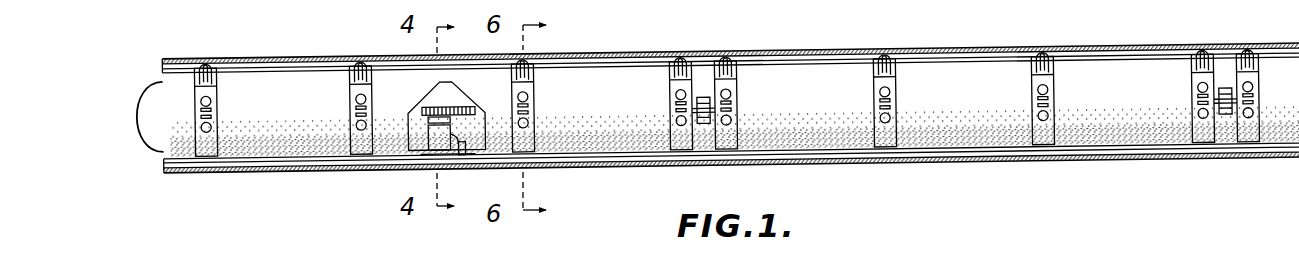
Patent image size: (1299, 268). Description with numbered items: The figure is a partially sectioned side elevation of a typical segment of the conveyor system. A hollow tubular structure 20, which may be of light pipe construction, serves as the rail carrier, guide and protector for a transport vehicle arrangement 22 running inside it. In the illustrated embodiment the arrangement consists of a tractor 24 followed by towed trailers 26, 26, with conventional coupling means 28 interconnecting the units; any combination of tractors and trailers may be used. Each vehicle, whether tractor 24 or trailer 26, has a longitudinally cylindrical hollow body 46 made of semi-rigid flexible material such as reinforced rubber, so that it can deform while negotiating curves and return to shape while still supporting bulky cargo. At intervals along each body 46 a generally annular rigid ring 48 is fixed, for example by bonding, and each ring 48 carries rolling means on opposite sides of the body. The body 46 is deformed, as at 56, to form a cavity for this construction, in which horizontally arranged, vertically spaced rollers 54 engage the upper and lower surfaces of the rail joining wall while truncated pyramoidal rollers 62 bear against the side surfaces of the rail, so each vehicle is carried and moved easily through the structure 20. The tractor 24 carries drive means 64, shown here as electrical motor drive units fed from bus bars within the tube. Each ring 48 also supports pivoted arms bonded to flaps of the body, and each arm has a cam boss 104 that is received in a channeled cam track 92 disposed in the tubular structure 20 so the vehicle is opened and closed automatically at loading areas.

The hollow tubular structure 20 is at (717, 120).
The transport vehicle arrangement 22 is at (639, 152).
The tractor 24 is at (579, 140).
The towed trailer 26 is at (1280, 132).
The coupling means 28 is at (703, 97).
The cylindrical hollow body 46 is at (290, 140).
The rigid ring 48 is at (209, 150).
The roller 54 is at (1037, 110).
The body deformation 56 is at (1034, 100).
The truncated pyramoidal roller 62 is at (531, 98).
The drive means 64 is at (428, 148).
The cam track 92 is at (800, 59).
The cam boss 104 is at (674, 60).